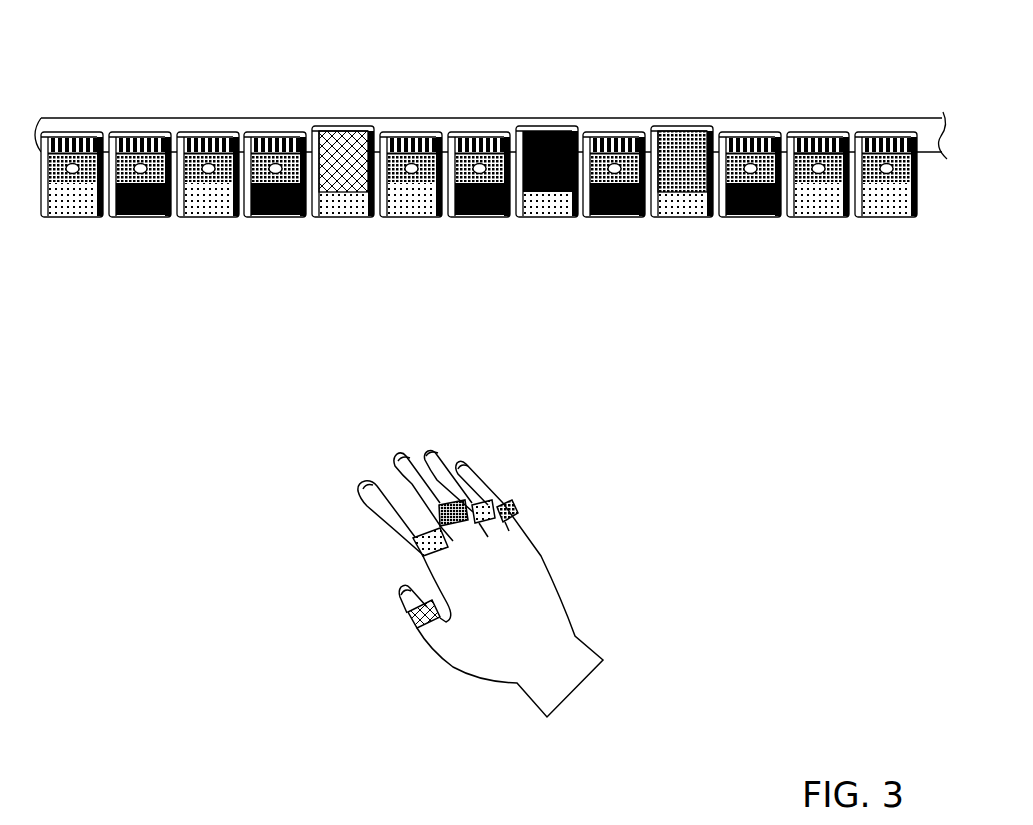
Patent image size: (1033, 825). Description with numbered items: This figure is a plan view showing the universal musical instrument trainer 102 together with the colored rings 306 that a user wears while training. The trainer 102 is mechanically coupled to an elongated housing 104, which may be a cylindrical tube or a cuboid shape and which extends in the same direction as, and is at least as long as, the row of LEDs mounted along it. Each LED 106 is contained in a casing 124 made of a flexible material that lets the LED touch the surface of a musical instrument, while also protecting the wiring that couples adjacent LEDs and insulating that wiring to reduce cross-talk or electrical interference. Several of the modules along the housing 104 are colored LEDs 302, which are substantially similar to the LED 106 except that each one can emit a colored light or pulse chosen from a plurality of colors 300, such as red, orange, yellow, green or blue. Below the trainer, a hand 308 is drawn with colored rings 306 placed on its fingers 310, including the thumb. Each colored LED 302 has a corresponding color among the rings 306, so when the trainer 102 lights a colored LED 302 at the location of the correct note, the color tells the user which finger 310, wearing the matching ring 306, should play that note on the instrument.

The universal musical instrument trainer 102 is at (128, 84).
The housing 104 is at (873, 123).
The LED 106 is at (205, 210).
The casing 124 is at (70, 193).
The plurality of colors 300 is at (712, 82).
The colored LED 302 is at (338, 195).
The colored ring 306 is at (345, 480).
The hand 308 is at (588, 637).
The finger 310 is at (503, 434).